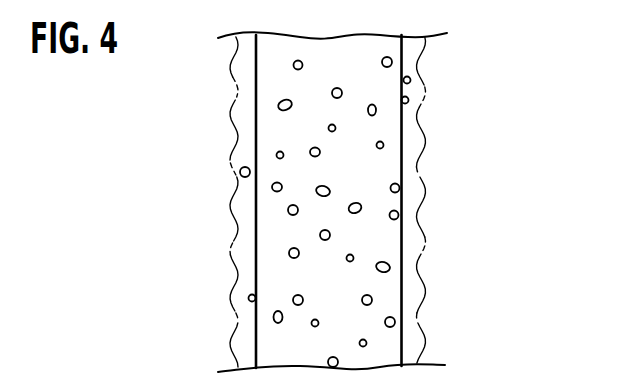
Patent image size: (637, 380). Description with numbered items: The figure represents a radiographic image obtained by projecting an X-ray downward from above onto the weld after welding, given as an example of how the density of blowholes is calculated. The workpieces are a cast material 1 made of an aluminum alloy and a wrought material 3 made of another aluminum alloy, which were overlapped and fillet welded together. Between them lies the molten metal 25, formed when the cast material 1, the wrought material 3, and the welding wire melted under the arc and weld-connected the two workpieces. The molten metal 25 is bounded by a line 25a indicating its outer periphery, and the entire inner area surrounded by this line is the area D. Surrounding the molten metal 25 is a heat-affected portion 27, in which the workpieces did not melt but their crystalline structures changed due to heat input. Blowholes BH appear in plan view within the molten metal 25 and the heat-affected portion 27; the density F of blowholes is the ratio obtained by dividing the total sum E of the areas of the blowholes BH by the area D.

The cast material 1 is at (475, 208).
The wrought material 3 is at (190, 208).
The molten metal 25 is at (375, 130).
The line indicating the outer periphery of the molten metal 25a is at (402, 236).
The heat-affected portion 27 is at (247, 78).
The blowholes BH is at (348, 262).